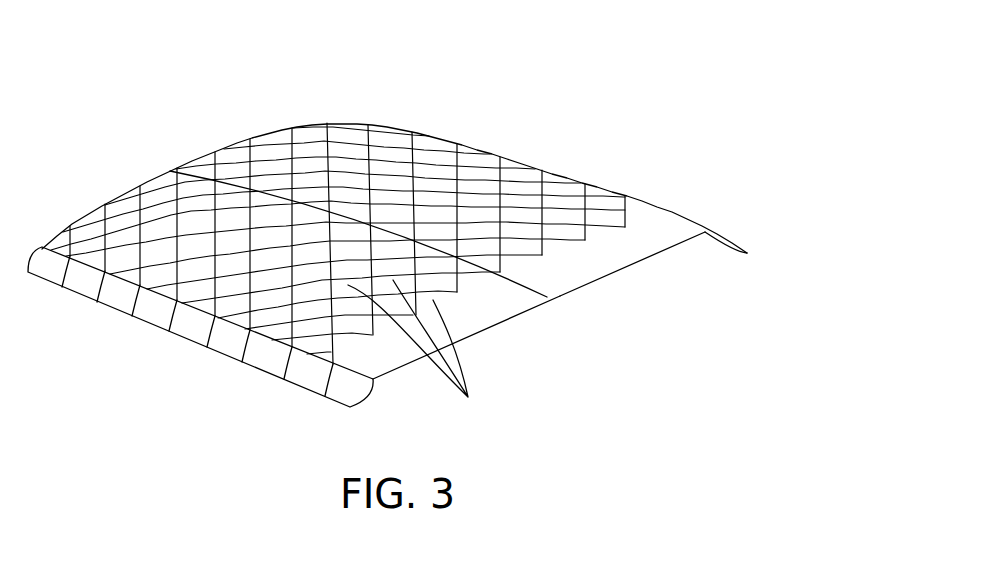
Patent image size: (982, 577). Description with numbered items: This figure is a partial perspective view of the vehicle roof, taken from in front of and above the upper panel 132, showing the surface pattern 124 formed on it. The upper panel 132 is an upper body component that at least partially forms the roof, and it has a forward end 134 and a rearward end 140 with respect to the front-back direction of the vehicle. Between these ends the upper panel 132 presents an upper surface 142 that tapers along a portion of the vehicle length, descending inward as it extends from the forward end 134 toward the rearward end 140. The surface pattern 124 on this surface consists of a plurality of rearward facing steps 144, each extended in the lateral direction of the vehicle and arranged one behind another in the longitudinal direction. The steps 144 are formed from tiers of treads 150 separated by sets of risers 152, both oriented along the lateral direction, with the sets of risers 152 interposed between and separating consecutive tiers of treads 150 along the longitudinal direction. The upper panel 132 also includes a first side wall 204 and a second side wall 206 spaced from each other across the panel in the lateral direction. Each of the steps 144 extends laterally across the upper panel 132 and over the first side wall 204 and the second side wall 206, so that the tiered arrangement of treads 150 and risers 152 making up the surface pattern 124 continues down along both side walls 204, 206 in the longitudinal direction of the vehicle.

The surface pattern 124 is at (522, 60).
The upper panel 132 is at (313, 123).
The forward end 134 is at (537, 305).
The rearward end 140 is at (161, 170).
The upper surface 142 is at (493, 307).
The plurality of rearward facing steps 144 is at (468, 398).
The tiers of treads 150 is at (643, 224).
The sets of risers 152 is at (600, 192).
The first side wall 204 is at (727, 241).
The second side wall 206 is at (300, 372).